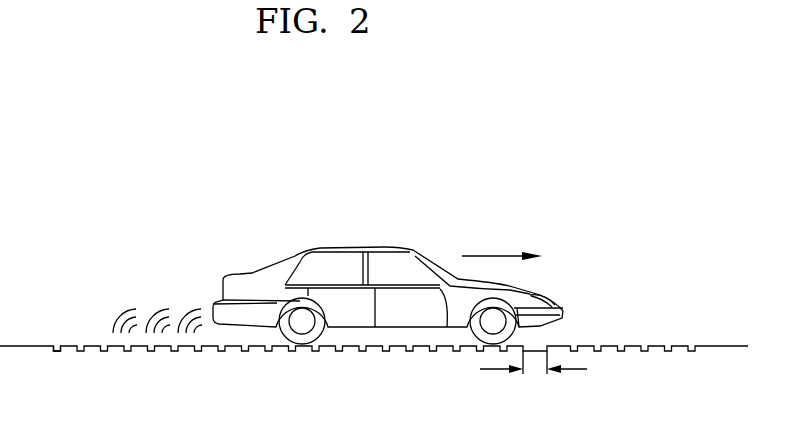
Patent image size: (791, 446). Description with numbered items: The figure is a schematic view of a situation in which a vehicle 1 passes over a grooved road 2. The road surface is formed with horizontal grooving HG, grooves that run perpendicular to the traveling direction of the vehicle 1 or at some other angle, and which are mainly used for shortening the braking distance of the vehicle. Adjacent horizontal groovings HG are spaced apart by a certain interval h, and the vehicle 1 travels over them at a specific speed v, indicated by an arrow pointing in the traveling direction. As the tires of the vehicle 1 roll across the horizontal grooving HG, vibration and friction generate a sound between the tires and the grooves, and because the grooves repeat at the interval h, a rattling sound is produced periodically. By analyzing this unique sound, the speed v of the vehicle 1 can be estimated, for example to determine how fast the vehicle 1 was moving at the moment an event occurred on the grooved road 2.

The vehicle 1 is at (273, 234).
The grooved road 2 is at (673, 334).
The horizontal grooving HG is at (57, 345).
The interval h is at (533, 374).
The speed v is at (502, 244).